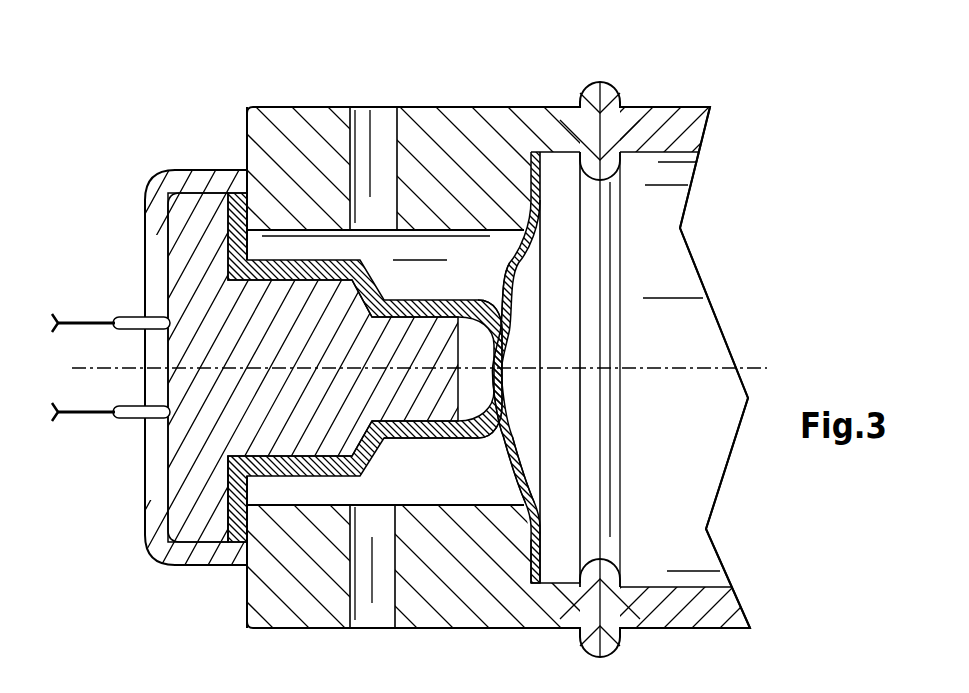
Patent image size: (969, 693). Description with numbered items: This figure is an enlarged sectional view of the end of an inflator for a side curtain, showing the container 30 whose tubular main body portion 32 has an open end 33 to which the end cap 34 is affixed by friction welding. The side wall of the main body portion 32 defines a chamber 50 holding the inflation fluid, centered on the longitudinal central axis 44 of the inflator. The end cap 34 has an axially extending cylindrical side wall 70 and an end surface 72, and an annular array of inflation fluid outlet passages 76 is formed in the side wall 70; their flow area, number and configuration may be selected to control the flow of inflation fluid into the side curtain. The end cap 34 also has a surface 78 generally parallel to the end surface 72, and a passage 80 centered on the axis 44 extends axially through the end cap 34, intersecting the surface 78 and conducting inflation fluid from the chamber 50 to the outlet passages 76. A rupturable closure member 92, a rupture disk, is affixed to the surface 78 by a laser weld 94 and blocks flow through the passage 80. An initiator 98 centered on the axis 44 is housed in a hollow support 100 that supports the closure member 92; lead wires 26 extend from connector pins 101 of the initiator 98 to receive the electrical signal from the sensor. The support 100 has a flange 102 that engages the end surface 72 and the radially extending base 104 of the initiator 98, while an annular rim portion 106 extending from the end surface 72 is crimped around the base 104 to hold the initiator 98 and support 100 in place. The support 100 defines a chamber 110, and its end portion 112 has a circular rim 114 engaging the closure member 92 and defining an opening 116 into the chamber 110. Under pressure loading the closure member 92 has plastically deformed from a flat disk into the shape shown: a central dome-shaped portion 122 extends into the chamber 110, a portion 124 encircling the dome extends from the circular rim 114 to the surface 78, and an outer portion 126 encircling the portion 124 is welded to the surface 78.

The lead wires 26 is at (80, 318).
The container 30 is at (695, 95).
The main body portion 32 is at (688, 122).
The open end 33 is at (648, 107).
The end cap 34 is at (533, 107).
The longitudinal central axis 44 is at (743, 370).
The chamber 50 is at (690, 170).
The side wall 70 is at (267, 107).
The end surface 72 is at (245, 128).
The inflation fluid outlet passages 76 is at (370, 128).
The surface 78 is at (540, 204).
The passage 80 is at (480, 250).
The rupturable closure member 92 is at (555, 490).
The laser weld 94 is at (514, 173).
The initiator 98 is at (192, 302).
The hollow support 100 is at (440, 440).
The connector pins 101 is at (43, 300).
The flange 102 is at (237, 520).
The base 104 is at (196, 511).
The annular rim portion 106 is at (160, 200).
The chamber 110 is at (480, 340).
The end portion 112 is at (465, 442).
The circular rim 114 is at (513, 423).
The opening 116 is at (510, 410).
The central dome-shaped portion 122 is at (500, 380).
The portion 124 is at (518, 563).
The portion 126 is at (540, 535).